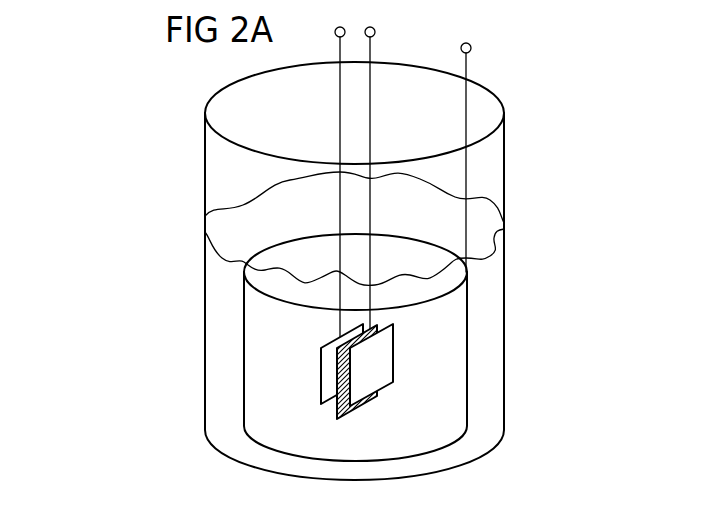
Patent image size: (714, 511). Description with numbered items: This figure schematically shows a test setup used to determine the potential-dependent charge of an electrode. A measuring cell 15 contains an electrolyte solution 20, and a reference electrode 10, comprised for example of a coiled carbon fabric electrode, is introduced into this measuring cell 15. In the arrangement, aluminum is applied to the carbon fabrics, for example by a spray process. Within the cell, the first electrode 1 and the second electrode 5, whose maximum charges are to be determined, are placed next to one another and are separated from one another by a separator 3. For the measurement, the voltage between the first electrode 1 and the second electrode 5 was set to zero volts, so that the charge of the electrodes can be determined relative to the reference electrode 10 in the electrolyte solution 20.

The first electrode 1 is at (328, 367).
The separator 3 is at (352, 410).
The second electrode 5 is at (385, 362).
The reference electrode 10 is at (418, 304).
The measuring cell 15 is at (408, 63).
The electrolyte solution 20 is at (498, 367).